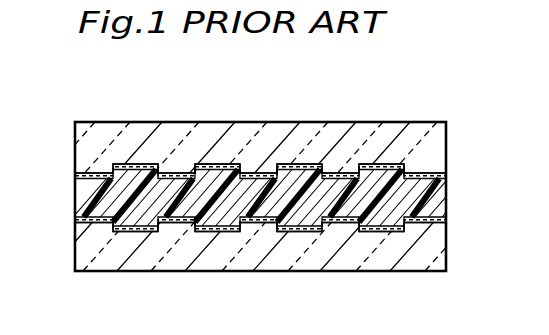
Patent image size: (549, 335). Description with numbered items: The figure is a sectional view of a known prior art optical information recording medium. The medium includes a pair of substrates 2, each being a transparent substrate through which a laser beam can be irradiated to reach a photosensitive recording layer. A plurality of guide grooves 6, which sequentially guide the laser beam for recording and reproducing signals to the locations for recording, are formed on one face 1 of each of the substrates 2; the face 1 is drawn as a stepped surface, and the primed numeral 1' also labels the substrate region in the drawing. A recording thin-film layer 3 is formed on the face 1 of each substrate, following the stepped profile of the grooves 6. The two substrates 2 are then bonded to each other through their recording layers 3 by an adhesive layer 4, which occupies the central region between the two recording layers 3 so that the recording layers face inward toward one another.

The face 1 is at (234, 195).
The insulating base layer 1' is at (256, 195).
The substrate 2 is at (377, 122).
The recording thin-film layer 3 is at (300, 164).
The adhesive layer 4 is at (447, 200).
The guide groove 6 is at (175, 226).